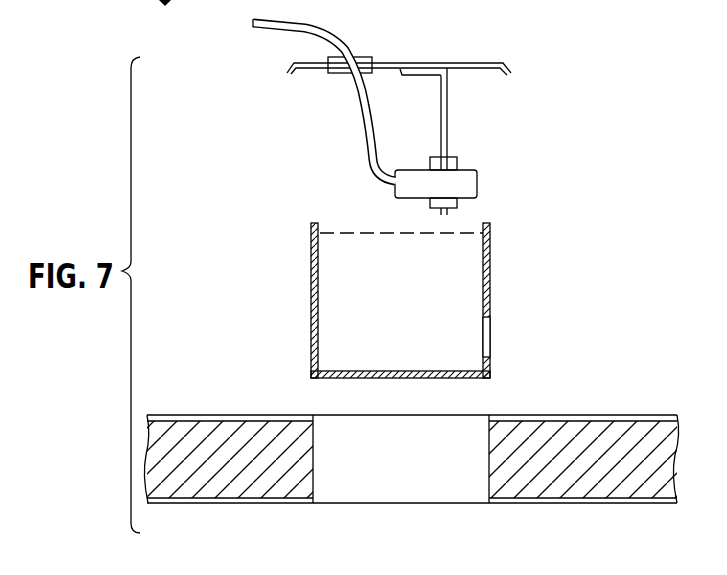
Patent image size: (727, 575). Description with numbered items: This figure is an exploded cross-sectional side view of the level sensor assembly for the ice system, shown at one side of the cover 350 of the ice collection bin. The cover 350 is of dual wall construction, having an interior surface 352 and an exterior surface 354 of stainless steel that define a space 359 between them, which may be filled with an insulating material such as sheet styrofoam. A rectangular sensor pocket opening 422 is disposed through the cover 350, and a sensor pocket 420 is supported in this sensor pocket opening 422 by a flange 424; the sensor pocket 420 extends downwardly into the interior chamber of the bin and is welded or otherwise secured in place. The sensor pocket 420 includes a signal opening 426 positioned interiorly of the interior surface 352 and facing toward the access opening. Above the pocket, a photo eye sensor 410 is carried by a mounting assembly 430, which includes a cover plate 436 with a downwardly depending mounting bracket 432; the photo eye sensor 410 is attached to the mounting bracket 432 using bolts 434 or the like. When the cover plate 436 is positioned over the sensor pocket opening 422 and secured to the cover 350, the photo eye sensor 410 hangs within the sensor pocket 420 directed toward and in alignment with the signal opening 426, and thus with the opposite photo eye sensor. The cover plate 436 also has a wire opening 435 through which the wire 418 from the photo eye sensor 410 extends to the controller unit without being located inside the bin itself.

The photo eye sensor 410 is at (468, 184).
The wire 418 is at (330, 33).
The sensor pocket 420 is at (401, 271).
The sensor pocket opening 422 is at (472, 495).
The flange 424 is at (347, 222).
The signal opening 426 is at (490, 334).
The mounting assembly 430 is at (583, 135).
The mounting bracket 432 is at (446, 122).
The bolts 434 is at (457, 163).
The wire opening 435 is at (347, 74).
The cover plate 436 is at (478, 63).
The cover 350 is at (411, 445).
The interior surface 352 is at (598, 503).
The exterior surface 354 is at (563, 415).
The space 359 is at (633, 430).